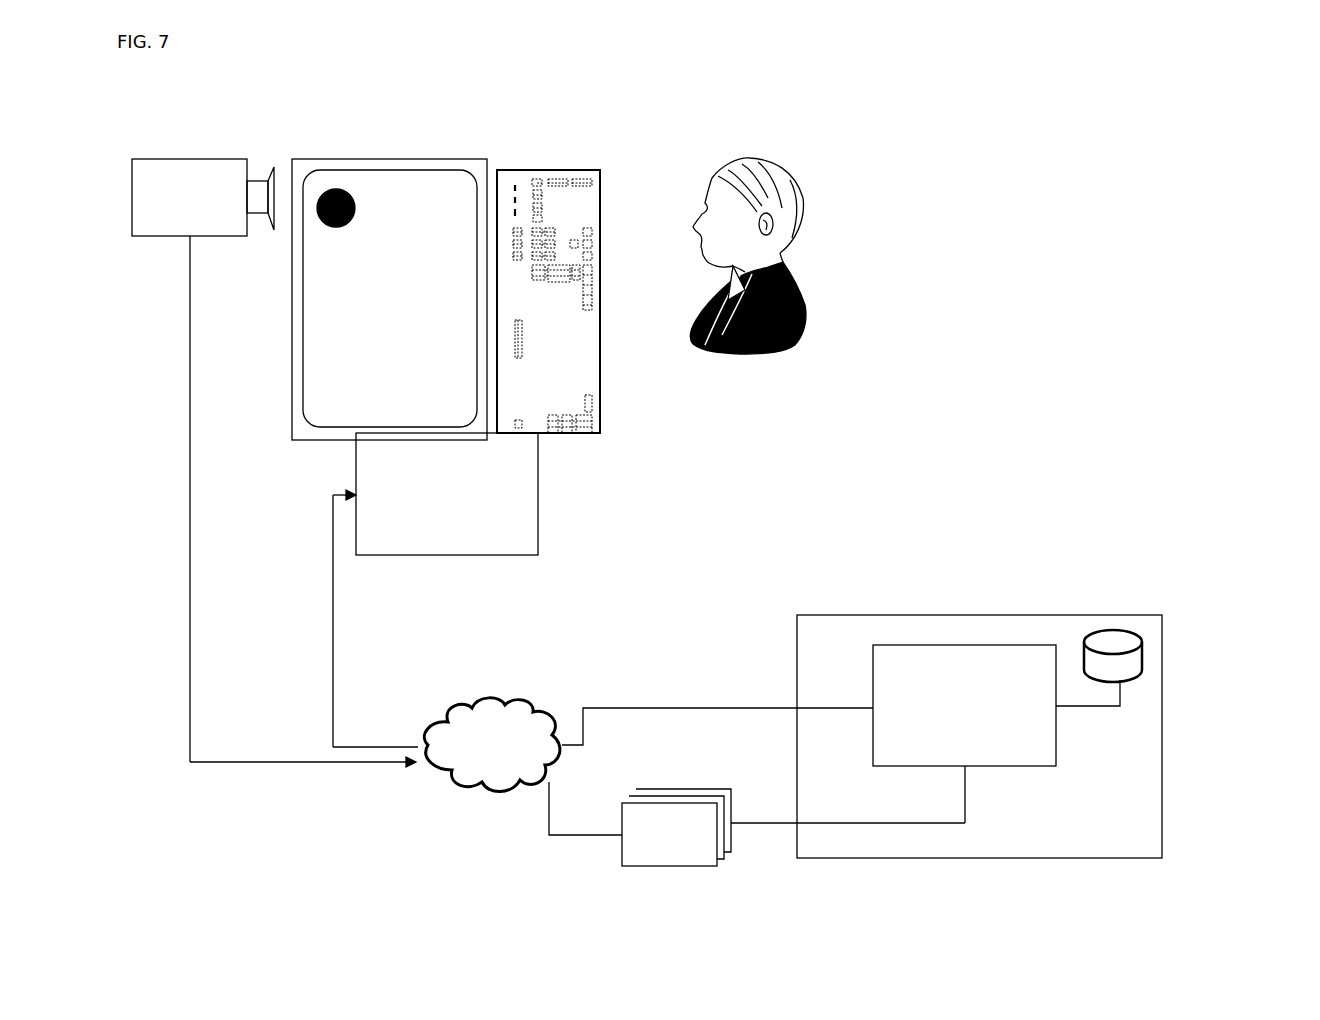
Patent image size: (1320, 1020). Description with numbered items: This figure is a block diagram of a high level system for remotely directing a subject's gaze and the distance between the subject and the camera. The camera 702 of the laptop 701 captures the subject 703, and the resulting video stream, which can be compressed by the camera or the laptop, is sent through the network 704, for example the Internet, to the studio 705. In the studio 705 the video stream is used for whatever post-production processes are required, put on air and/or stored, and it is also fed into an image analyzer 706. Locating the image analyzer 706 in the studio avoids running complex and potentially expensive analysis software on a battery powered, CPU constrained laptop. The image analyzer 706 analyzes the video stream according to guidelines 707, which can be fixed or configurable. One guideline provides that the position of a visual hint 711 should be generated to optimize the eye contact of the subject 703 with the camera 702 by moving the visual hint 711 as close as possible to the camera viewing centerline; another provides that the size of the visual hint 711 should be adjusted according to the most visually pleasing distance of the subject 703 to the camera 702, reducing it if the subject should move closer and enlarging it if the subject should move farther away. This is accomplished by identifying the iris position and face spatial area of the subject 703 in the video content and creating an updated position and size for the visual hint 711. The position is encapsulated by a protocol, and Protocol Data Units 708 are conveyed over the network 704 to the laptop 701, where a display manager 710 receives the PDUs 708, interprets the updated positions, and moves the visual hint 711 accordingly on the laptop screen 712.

The laptop 701 is at (291, 318).
The camera 702 is at (190, 158).
The subject 703 is at (810, 322).
The network 704 is at (528, 698).
The studio 705 is at (1163, 735).
The image analyzer 706 is at (963, 644).
The guidelines 707 is at (1143, 645).
The Protocol Data Units 708 is at (668, 867).
The display manager 710 is at (445, 556).
The visual hint 711 is at (336, 189).
The laptop screen 712 is at (426, 170).